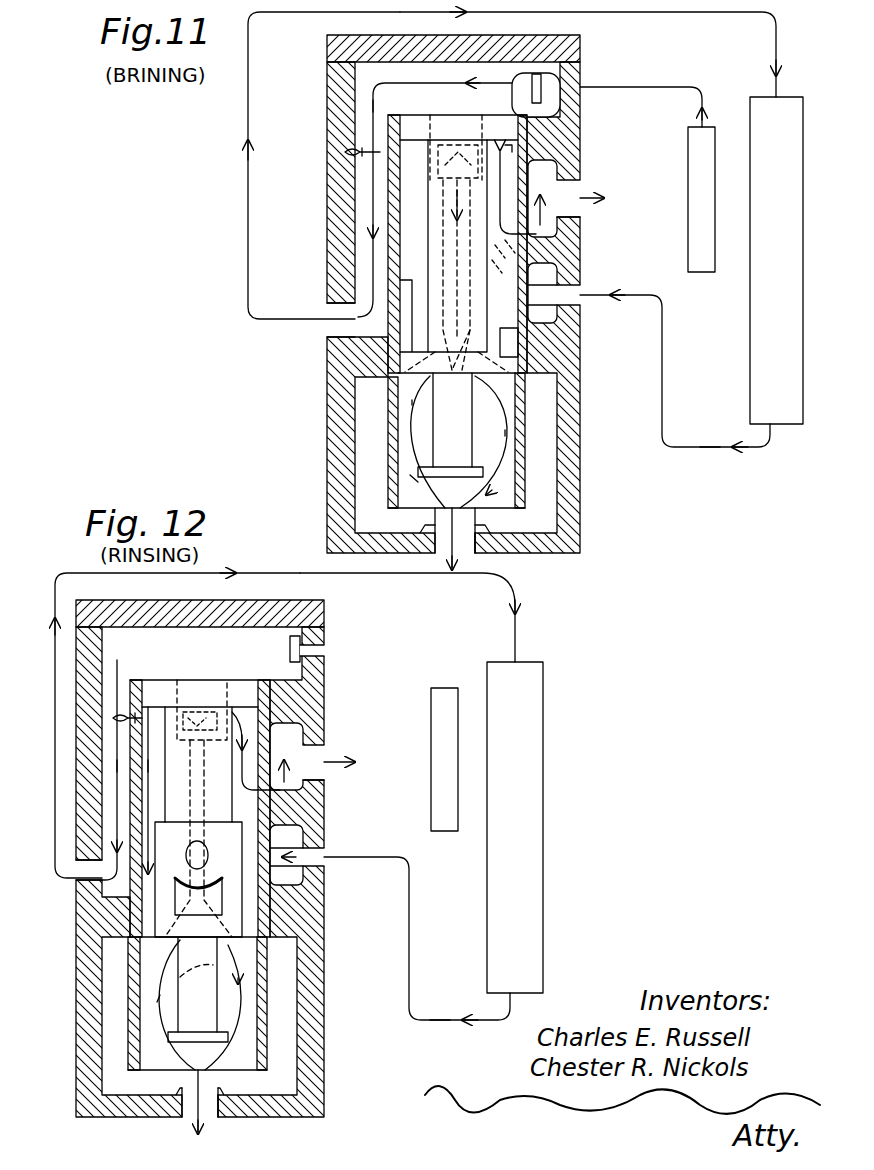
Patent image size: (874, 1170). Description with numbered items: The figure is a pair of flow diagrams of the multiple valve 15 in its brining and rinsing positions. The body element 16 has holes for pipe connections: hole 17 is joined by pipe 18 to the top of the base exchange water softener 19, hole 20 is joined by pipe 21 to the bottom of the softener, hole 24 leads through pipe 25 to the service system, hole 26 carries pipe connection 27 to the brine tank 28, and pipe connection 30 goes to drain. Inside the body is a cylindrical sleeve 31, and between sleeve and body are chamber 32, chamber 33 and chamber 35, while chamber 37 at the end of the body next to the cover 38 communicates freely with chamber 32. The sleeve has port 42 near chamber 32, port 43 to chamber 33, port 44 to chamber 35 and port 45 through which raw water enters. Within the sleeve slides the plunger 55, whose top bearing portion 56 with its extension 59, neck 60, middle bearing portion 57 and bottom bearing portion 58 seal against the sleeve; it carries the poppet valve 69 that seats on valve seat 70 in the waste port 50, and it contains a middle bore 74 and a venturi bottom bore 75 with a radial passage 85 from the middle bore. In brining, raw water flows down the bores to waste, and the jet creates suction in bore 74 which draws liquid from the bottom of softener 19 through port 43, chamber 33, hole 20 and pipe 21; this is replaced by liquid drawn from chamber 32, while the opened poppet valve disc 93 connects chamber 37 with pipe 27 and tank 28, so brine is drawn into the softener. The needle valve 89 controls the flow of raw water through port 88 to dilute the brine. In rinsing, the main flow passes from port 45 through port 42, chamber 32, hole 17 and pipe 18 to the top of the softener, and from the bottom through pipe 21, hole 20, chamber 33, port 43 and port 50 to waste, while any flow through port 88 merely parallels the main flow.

In FIG. 11, the multiple valve 15 is at (325, 408).
In FIG. 12, the multiple valve 15 is at (74, 957).
In FIG. 11, the body element 16 is at (327, 464).
In FIG. 12, the body element 16 is at (76, 1000).
In FIG. 11, the hole 17 is at (332, 326).
In FIG. 12, the hole 17 is at (80, 897).
In FIG. 11, the pipe 18 is at (779, 40).
In FIG. 12, the pipe 18 is at (517, 630).
In FIG. 11, the base exchange water softener 19 is at (750, 324).
In FIG. 12, the base exchange water softener 19 is at (543, 722).
In FIG. 11, the hole 20 is at (584, 300).
In FIG. 12, the hole 20 is at (330, 858).
In FIG. 11, the pipe 21 is at (680, 448).
In FIG. 12, the pipe 21 is at (408, 1000).
In FIG. 11, the hole 24 is at (578, 212).
In FIG. 12, the hole 24 is at (322, 748).
In FIG. 11, the pipe 25 is at (586, 194).
In FIG. 12, the pipe 25 is at (340, 760).
In FIG. 12, the hole 26 is at (326, 652).
In FIG. 11, the pipe connection 27 is at (636, 87).
In FIG. 11, the brine tank 28 is at (687, 202).
In FIG. 12, the brine tank 28 is at (430, 792).
In FIG. 11, the pipe connection 30 is at (446, 562).
In FIG. 12, the pipe connection 30 is at (195, 1128).
In FIG. 11, the cylindrical sleeve 31 is at (520, 420).
In FIG. 12, the cylindrical sleeve 31 is at (258, 990).
In FIG. 11, the chamber 32 is at (353, 204).
In FIG. 12, the chamber 32 is at (102, 776).
In FIG. 11, the chamber 33 is at (542, 276).
In FIG. 12, the chamber 33 is at (286, 837).
In FIG. 11, the chamber 35 is at (540, 197).
In FIG. 12, the chamber 35 is at (281, 756).
In FIG. 11, the chamber 37 is at (435, 192).
In FIG. 12, the chamber 37 is at (152, 758).
In FIG. 11, the cover 38 is at (582, 46).
In FIG. 12, the cover 38 is at (326, 610).
In FIG. 11, the port 42 is at (394, 336).
In FIG. 12, the port 42 is at (134, 906).
In FIG. 11, the port 43 is at (542, 308).
In FIG. 12, the port 43 is at (286, 872).
In FIG. 11, the port 44 is at (538, 234).
In FIG. 12, the port 44 is at (281, 795).
In FIG. 11, the port 45 is at (434, 184).
In FIG. 12, the port 45 is at (202, 710).
In FIG. 11, the port 50 is at (470, 548).
In FIG. 12, the port 50 is at (213, 1114).
In FIG. 11, the plunger 55 is at (443, 430).
In FIG. 12, the plunger 55 is at (195, 935).
In FIG. 11, the top cylindrical bearing portion 56 is at (498, 124).
In FIG. 12, the top cylindrical bearing portion 56 is at (150, 690).
In FIG. 11, the middle cylindrical bearing portion 57 is at (414, 270).
In FIG. 12, the middle cylindrical bearing portion 57 is at (250, 826).
In FIG. 11, the bottom cylindrical bearing portion 58 is at (505, 374).
In FIG. 12, the bottom cylindrical bearing portion 58 is at (150, 940).
In FIG. 11, the extension 59 is at (512, 189).
In FIG. 12, the extension 59 is at (251, 751).
In FIG. 11, the neck 60 is at (424, 214).
In FIG. 12, the neck 60 is at (180, 778).
In FIG. 11, the poppet valve 69 is at (484, 468).
In FIG. 12, the poppet valve 69 is at (224, 1032).
In FIG. 11, the valve seat 70 is at (428, 527).
In FIG. 12, the valve seat 70 is at (178, 1090).
In FIG. 11, the middle portion of bore 74 is at (460, 276).
In FIG. 12, the middle portion of bore 74 is at (198, 838).
In FIG. 11, the bottom portion of bore 75 is at (470, 332).
In FIG. 12, the bottom portion of bore 75 is at (186, 866).
In FIG. 11, the radial passage 85 is at (516, 292).
In FIG. 12, the radial passage 85 is at (208, 858).
In FIG. 11, the radial port 88 is at (459, 127).
In FIG. 12, the radial port 88 is at (200, 696).
In FIG. 11, the needle valve 89 is at (346, 152).
In FIG. 12, the needle valve 89 is at (120, 712).
In FIG. 11, the poppet valve disc 93 is at (540, 70).
In FIG. 12, the poppet valve disc 93 is at (290, 648).